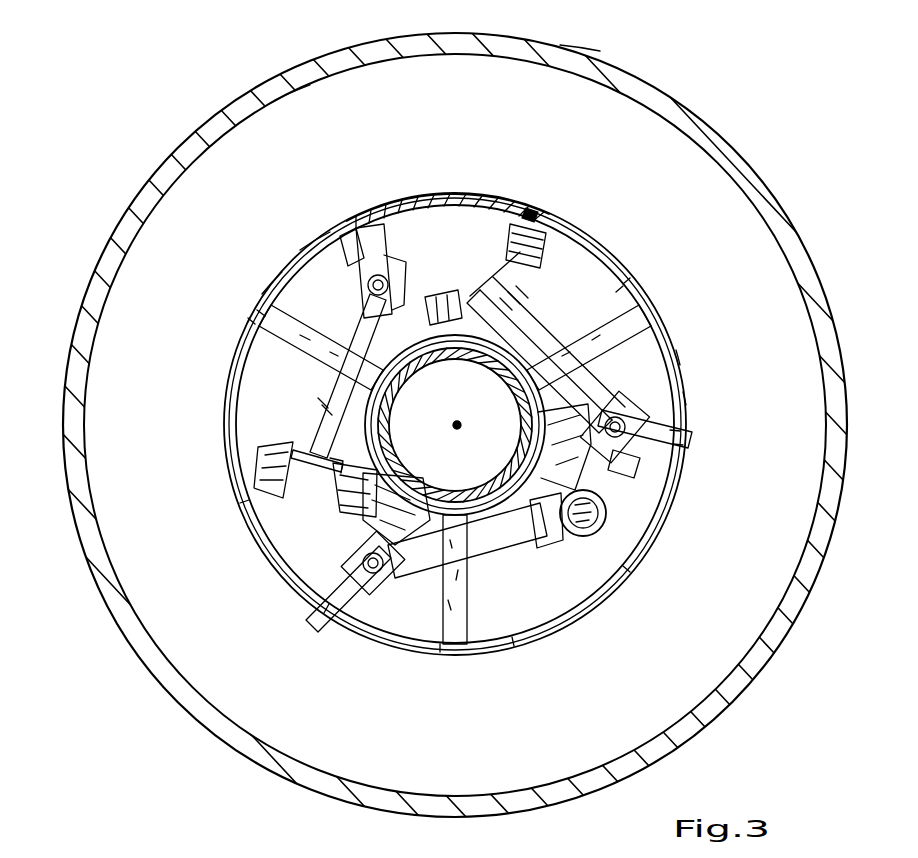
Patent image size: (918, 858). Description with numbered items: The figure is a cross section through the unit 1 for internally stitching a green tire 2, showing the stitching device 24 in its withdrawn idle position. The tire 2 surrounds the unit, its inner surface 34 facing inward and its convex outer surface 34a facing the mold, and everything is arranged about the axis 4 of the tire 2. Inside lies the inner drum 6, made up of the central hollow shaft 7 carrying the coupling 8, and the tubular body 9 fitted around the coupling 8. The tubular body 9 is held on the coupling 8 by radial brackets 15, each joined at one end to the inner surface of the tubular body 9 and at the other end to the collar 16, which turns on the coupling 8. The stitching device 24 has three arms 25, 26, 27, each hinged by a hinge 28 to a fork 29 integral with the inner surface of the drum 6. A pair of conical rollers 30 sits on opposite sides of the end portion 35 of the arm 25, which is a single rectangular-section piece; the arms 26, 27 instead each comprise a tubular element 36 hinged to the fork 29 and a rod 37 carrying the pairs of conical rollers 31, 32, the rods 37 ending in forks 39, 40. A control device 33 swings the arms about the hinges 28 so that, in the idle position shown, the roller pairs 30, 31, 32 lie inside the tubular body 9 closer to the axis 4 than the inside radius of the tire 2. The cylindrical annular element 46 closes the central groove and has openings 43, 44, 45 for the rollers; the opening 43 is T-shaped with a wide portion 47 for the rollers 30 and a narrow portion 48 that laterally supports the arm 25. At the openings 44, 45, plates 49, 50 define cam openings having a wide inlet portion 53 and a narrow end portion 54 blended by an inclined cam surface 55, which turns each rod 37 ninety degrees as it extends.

The unit 1 is at (733, 102).
The green tire 2 is at (773, 184).
The axis 4 is at (461, 424).
The inner drum 6 is at (241, 548).
The central hollow shaft 7 is at (455, 425).
The coupling 8 is at (463, 352).
The tubular body 9 is at (481, 193).
The radial brackets 15 is at (262, 317).
The collar 16 is at (481, 492).
The stitching device 24 is at (239, 598).
The arm 25 is at (484, 557).
The arm 26 is at (323, 428).
The arm 27 is at (558, 337).
The hinge 28 is at (357, 289).
The fork 29 is at (366, 230).
The conical rollers 30 is at (585, 540).
The conical rollers 31 is at (260, 491).
The conical rollers 32 is at (553, 241).
The control device 33 is at (517, 341).
The inner surface 34 is at (296, 96).
The convex outer surface 34a is at (582, 47).
The end portion 35 is at (548, 541).
The tubular element 36 is at (628, 463).
The rod 37 is at (512, 307).
The fork 39 is at (309, 447).
The fork 40 is at (452, 290).
The opening 43 is at (486, 650).
The opening 44 is at (236, 460).
The opening 45 is at (534, 212).
The cylindrical annular element 46 is at (441, 193).
The wide portion 47 is at (606, 613).
The narrow portion 48 is at (364, 641).
The plate 49 is at (357, 238).
The plate 50 is at (691, 419).
The wide inlet portion 53 is at (239, 364).
The narrow end portion 54 is at (316, 250).
The inclined cam surface 55 is at (273, 287).